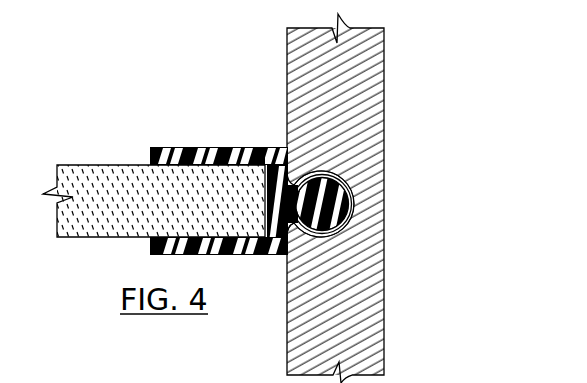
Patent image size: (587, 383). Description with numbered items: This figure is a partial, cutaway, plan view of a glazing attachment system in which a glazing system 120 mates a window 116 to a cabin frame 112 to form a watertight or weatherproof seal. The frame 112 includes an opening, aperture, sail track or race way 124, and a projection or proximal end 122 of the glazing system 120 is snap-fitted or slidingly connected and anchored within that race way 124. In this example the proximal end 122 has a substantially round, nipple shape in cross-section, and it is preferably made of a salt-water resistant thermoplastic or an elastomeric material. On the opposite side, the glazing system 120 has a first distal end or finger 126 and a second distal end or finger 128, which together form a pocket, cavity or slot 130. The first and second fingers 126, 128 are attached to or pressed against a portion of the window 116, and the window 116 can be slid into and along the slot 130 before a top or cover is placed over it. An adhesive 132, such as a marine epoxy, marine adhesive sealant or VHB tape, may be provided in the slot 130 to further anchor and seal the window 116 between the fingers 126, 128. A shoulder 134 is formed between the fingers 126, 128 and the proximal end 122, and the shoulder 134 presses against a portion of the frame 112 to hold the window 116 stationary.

The cabin frame 112 is at (372, 103).
The window 116 is at (113, 176).
The glazing system 120 is at (275, 182).
The proximal end 122 is at (340, 200).
The race way 124 is at (345, 228).
The first finger 126 is at (171, 147).
The second finger 128 is at (262, 257).
The slot 130 is at (262, 160).
The adhesive 132 is at (150, 152).
The shoulder 134 is at (290, 248).